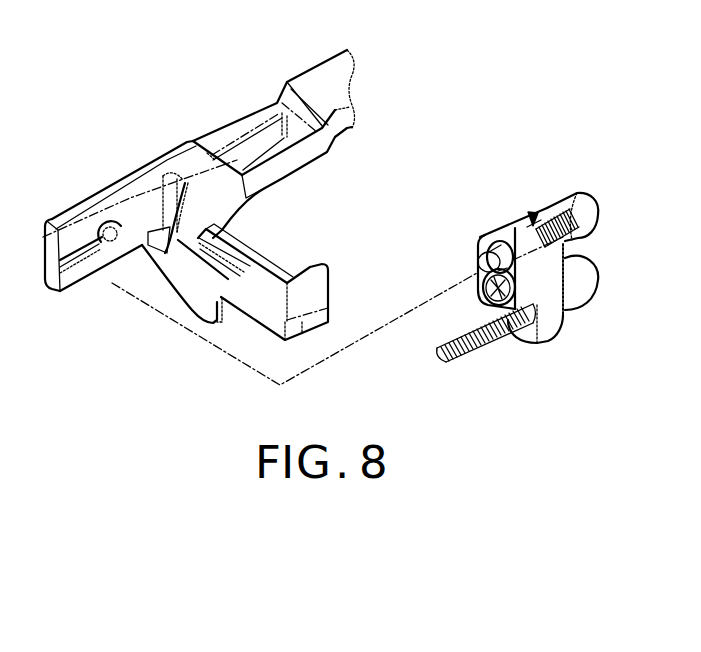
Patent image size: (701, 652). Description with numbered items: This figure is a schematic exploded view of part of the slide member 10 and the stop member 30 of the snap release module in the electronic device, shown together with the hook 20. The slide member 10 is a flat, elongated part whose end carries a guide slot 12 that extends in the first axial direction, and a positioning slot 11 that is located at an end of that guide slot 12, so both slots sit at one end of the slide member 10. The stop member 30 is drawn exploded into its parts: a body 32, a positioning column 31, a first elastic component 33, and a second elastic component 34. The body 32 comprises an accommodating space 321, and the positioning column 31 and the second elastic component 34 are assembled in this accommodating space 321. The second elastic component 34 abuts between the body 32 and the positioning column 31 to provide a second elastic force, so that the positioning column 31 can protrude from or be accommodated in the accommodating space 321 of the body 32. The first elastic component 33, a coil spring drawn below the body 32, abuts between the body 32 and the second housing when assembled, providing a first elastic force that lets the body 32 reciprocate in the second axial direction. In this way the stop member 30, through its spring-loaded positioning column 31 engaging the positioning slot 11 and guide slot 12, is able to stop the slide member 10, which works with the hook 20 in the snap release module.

The slide member 10 is at (176, 160).
The positioning slot 11 is at (119, 236).
The guide slot 12 is at (82, 240).
The hook 20 is at (309, 275).
The stop member 30 is at (476, 255).
The positioning column 31 is at (494, 240).
The body 32 is at (550, 320).
The accommodating space 321 is at (535, 212).
The first elastic component 33 is at (497, 345).
The second elastic component 34 is at (574, 197).